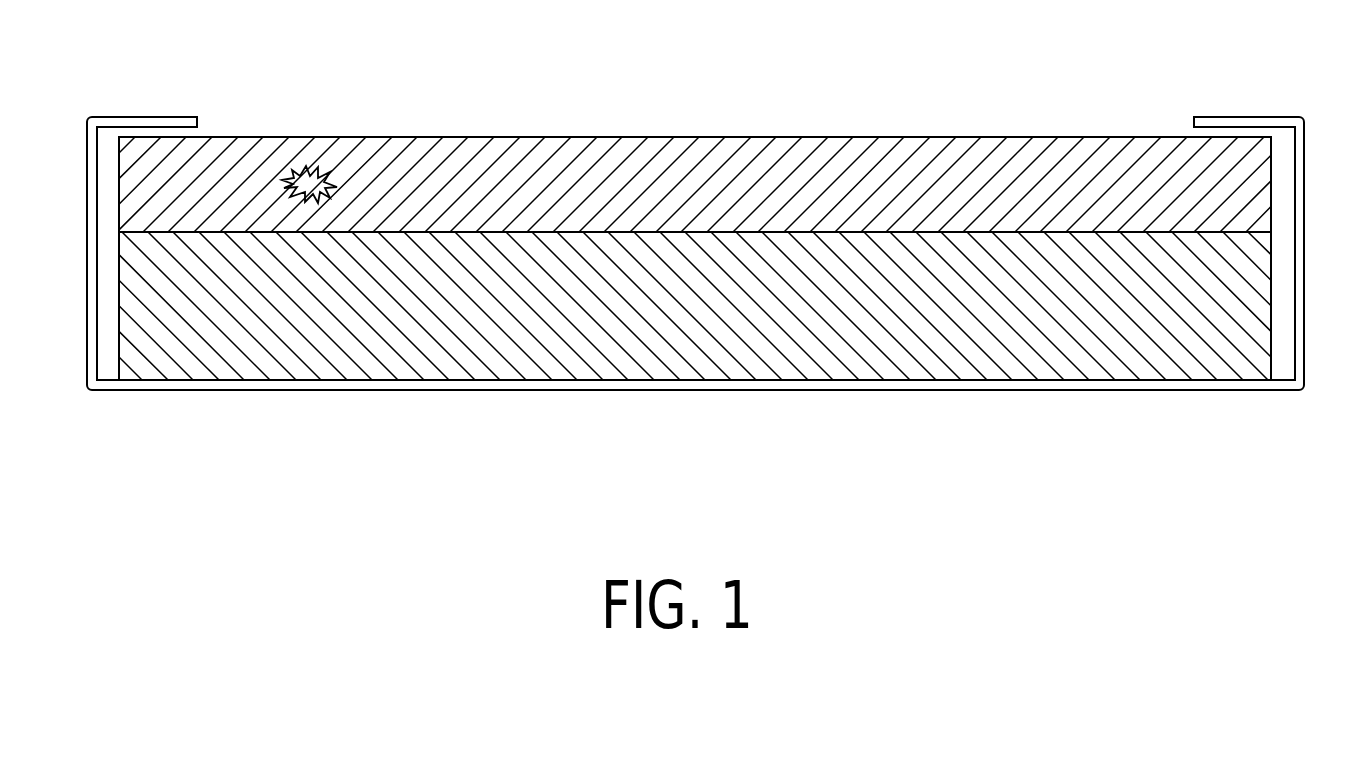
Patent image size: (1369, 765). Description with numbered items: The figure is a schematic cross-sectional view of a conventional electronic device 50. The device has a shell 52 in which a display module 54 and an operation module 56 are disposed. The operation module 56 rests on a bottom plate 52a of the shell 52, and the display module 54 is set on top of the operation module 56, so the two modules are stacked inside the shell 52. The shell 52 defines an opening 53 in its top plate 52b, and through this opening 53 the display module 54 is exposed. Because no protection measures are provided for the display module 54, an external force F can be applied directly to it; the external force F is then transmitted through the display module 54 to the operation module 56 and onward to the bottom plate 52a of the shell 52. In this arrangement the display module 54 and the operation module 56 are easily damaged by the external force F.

The electronic device 50 is at (725, 292).
The shell 52 is at (1300, 177).
The bottom plate 52a is at (752, 384).
The top plate 52b is at (1221, 120).
The opening 53 is at (695, 238).
The display module 54 is at (852, 137).
The operation module 56 is at (1035, 367).
The external force F is at (310, 166).